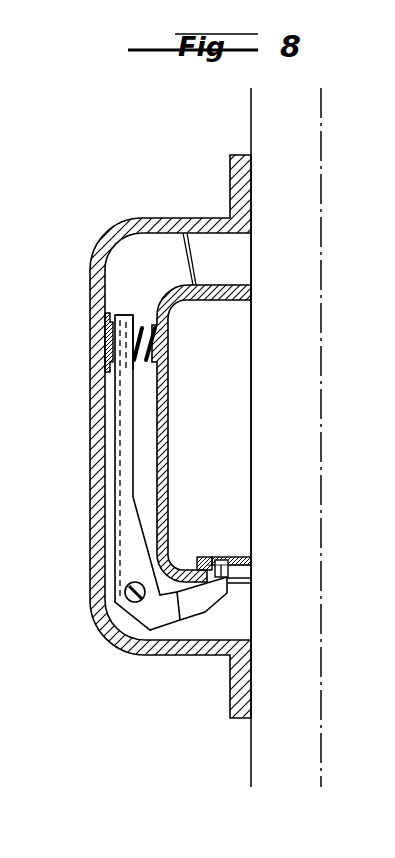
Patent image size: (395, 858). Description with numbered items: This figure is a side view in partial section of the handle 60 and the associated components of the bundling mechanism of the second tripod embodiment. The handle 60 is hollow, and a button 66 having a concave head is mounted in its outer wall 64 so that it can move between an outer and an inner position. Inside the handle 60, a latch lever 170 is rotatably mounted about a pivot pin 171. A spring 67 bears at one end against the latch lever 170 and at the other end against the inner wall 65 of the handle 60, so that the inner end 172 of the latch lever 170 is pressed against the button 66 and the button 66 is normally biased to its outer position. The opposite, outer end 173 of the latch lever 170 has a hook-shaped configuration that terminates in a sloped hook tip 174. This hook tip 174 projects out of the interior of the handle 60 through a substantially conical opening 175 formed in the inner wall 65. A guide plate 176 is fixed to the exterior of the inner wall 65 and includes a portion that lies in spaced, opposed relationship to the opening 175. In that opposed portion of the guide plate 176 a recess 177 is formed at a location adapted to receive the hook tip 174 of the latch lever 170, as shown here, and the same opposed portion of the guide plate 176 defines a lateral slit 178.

The handle 60 is at (137, 436).
The outer wall 64 is at (97, 500).
The inner wall 65 is at (168, 306).
The button 66 is at (98, 326).
The spring 67 is at (152, 337).
The latch lever 170 is at (134, 563).
The pivot pin 171 is at (122, 598).
The inner end 172 is at (121, 400).
The outer end 173 is at (205, 604).
The hook tip 174 is at (220, 558).
The conical opening 175 is at (238, 584).
The guide plate 176 is at (207, 557).
The recess 177 is at (218, 557).
The lateral slit 178 is at (224, 568).